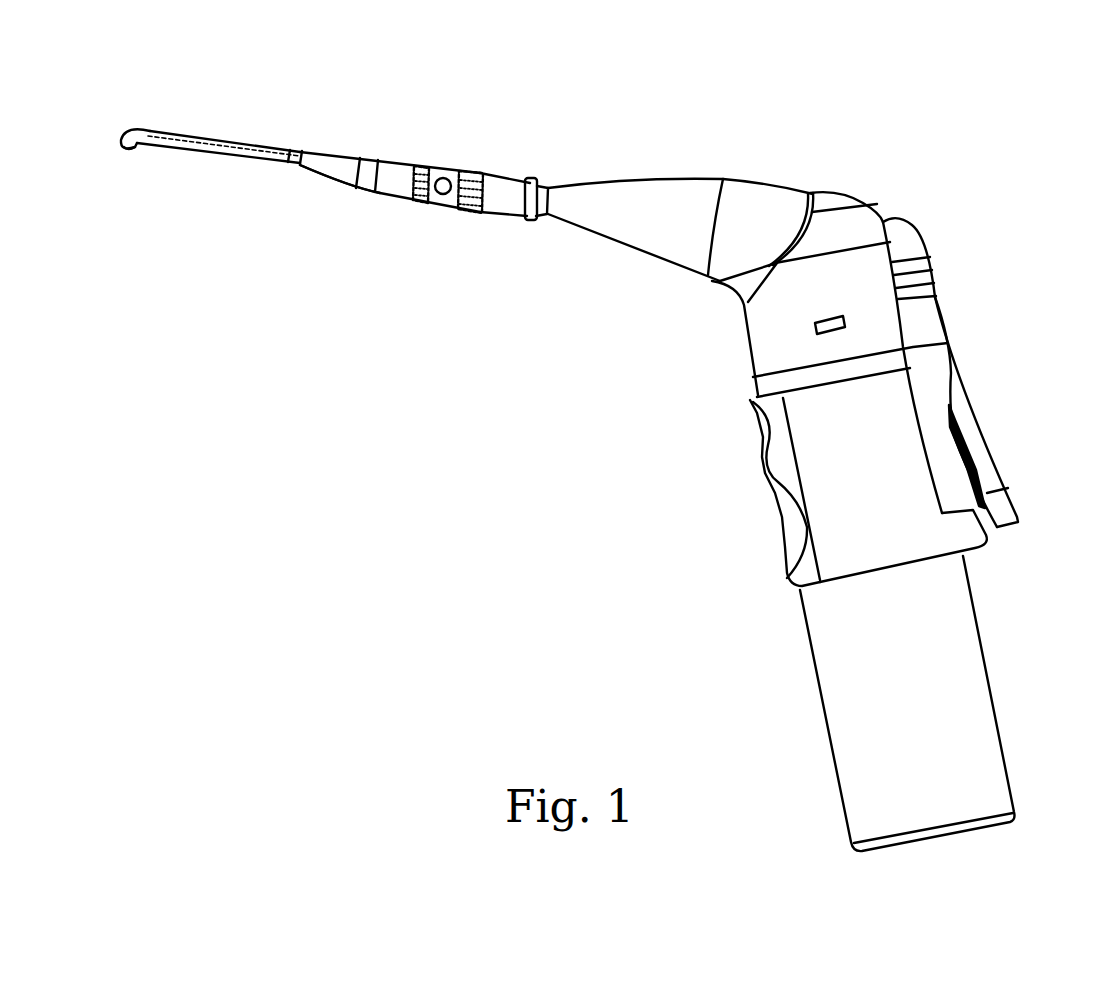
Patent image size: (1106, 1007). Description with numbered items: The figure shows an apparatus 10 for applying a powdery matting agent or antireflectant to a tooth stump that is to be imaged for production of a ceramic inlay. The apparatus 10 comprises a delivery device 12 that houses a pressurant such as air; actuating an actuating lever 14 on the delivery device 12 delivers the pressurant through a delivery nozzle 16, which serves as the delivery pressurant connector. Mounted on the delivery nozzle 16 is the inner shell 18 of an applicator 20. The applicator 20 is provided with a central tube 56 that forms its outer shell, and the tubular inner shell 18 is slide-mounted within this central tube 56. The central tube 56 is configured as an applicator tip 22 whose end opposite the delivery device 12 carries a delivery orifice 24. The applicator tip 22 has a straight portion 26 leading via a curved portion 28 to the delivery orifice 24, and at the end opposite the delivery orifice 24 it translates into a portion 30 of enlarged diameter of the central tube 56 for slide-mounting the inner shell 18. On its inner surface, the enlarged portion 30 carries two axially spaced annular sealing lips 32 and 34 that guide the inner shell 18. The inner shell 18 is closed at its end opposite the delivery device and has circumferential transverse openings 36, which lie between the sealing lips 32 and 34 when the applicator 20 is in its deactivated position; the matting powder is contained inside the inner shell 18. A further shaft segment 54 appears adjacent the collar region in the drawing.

The apparatus 10 is at (985, 147).
The delivery device 12 is at (837, 190).
The actuating lever 14 is at (970, 423).
The delivery nozzle 16 is at (560, 181).
The inner shell 18 is at (508, 177).
The applicator 20 is at (364, 146).
The applicator tip 22 is at (229, 139).
The delivery orifice 24 is at (130, 150).
The straight portion 26 is at (223, 152).
The curved portion 28 is at (137, 128).
The portion having an enlargened diameter 30 is at (385, 198).
The annular sealing lip 32 is at (472, 171).
The annular sealing lip 34 is at (428, 166).
The transverse openings 36 is at (432, 205).
The shaft segment 54 is at (495, 202).
The central tube 56 is at (333, 193).